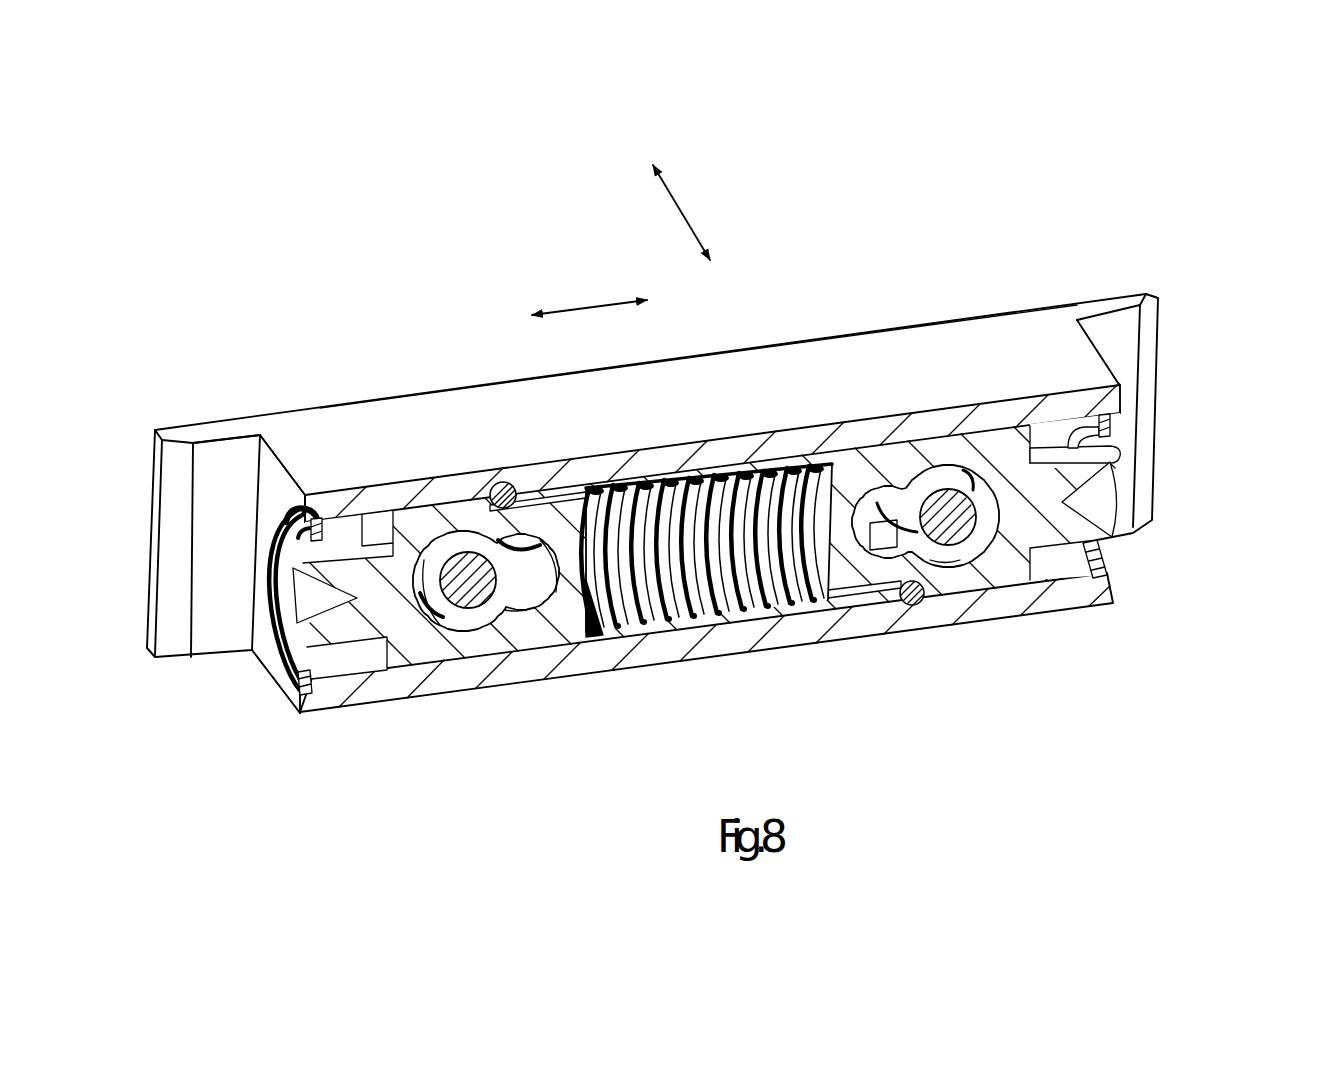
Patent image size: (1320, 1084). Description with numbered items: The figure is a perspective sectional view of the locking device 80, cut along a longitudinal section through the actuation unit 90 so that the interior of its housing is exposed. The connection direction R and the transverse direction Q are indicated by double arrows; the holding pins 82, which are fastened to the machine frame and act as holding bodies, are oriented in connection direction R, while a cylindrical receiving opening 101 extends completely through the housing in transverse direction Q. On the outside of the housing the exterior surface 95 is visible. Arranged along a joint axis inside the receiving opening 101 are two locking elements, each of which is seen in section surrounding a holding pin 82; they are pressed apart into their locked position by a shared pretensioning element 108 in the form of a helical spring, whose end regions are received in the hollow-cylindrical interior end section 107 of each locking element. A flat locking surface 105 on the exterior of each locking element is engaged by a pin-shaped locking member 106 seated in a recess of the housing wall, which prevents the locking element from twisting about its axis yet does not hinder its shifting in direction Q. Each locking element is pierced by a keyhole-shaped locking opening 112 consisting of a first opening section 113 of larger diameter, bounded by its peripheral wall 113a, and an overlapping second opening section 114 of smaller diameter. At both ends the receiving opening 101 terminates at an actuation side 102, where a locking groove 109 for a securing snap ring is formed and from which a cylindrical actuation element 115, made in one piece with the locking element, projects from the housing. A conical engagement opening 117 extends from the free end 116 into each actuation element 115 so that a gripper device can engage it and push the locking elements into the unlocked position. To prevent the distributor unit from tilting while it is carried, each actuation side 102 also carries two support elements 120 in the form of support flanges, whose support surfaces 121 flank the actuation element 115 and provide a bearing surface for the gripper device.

The locking device 80 is at (860, 287).
The holding pins 82 is at (483, 600).
The actuation unit 90 is at (1201, 364).
The exterior surface 95 is at (1022, 300).
The receiving opening 101 is at (670, 625).
The actuation side 102 is at (198, 683).
The locking surface 105 is at (548, 495).
The locking member 106 is at (497, 482).
The interior end section 107 is at (778, 462).
The pretensioning element 108 is at (706, 628).
The locking groove 109 is at (306, 695).
The locking opening 112 is at (527, 611).
The first opening section 113 is at (455, 632).
The peripheral wall 113a is at (432, 618).
The second opening section 114 is at (551, 600).
The actuation element 115 is at (330, 540).
The free end 116 is at (283, 547).
The engagement opening 117 is at (300, 640).
The support element 120 is at (183, 433).
The support surface 121 is at (229, 461).
The connection direction R is at (680, 206).
The transverse direction Q is at (577, 308).